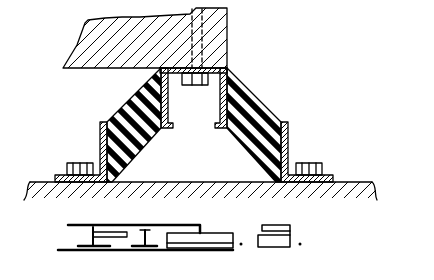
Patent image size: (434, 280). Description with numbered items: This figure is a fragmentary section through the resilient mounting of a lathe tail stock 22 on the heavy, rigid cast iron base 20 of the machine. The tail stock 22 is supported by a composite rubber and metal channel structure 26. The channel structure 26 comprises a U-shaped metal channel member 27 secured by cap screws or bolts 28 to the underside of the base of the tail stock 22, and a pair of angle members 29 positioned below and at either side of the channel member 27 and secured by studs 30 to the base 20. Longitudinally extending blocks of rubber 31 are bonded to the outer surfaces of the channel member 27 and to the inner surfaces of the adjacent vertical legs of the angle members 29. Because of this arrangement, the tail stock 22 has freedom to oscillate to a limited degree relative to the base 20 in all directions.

The base 20 is at (357, 182).
The lathe tail stock 22 is at (226, 35).
The composite rubber and metal channel structure 26 is at (272, 108).
The U-shaped metal channel member 27 is at (173, 126).
The cap screw or bolt 28 is at (202, 85).
The angle member 29 is at (100, 142).
The stud 30 is at (67, 165).
The block of rubber 31 is at (136, 96).